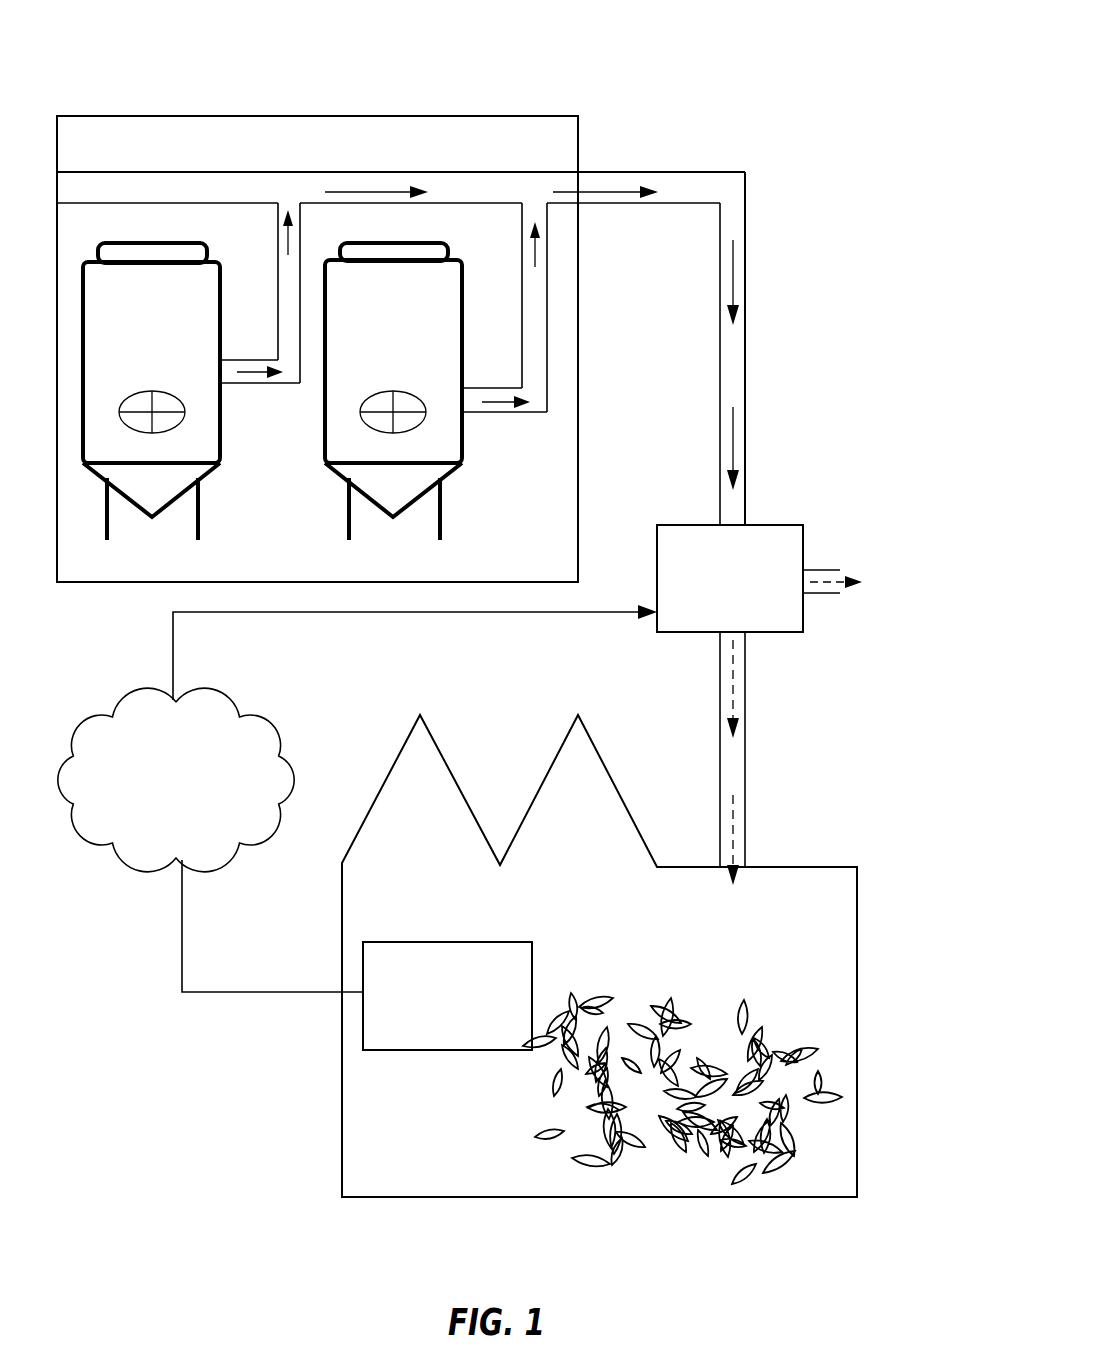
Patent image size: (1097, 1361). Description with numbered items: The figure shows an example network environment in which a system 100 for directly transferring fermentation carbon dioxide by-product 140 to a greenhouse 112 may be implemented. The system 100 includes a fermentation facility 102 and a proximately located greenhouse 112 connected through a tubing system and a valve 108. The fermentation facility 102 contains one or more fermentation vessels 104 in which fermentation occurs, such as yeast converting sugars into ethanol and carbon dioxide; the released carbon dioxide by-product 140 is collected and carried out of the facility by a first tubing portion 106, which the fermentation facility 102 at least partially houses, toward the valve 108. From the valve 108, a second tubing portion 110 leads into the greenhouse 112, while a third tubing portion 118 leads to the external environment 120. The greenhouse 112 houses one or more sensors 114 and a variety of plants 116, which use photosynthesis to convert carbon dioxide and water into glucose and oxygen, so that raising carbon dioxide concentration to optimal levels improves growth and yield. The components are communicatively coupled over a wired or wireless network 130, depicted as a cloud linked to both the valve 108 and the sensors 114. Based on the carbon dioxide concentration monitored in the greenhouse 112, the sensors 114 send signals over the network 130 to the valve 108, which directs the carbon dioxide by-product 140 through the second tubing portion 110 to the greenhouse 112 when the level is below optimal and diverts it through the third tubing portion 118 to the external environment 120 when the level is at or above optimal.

The system 100 is at (176, 34).
The fermentation facility 102 is at (134, 164).
The fermentation vessels 104 is at (335, 437).
The first tubing portion 106 is at (690, 172).
The valve 108 is at (753, 575).
The second tubing portion 110 is at (746, 777).
The greenhouse 112 is at (420, 927).
The sensors 114 is at (472, 993).
The plants 116 is at (783, 1022).
The third tubing portion 118 is at (820, 596).
The external environment 120 is at (892, 490).
The network 130 is at (198, 777).
The carbon dioxide by-product 140 is at (262, 282).